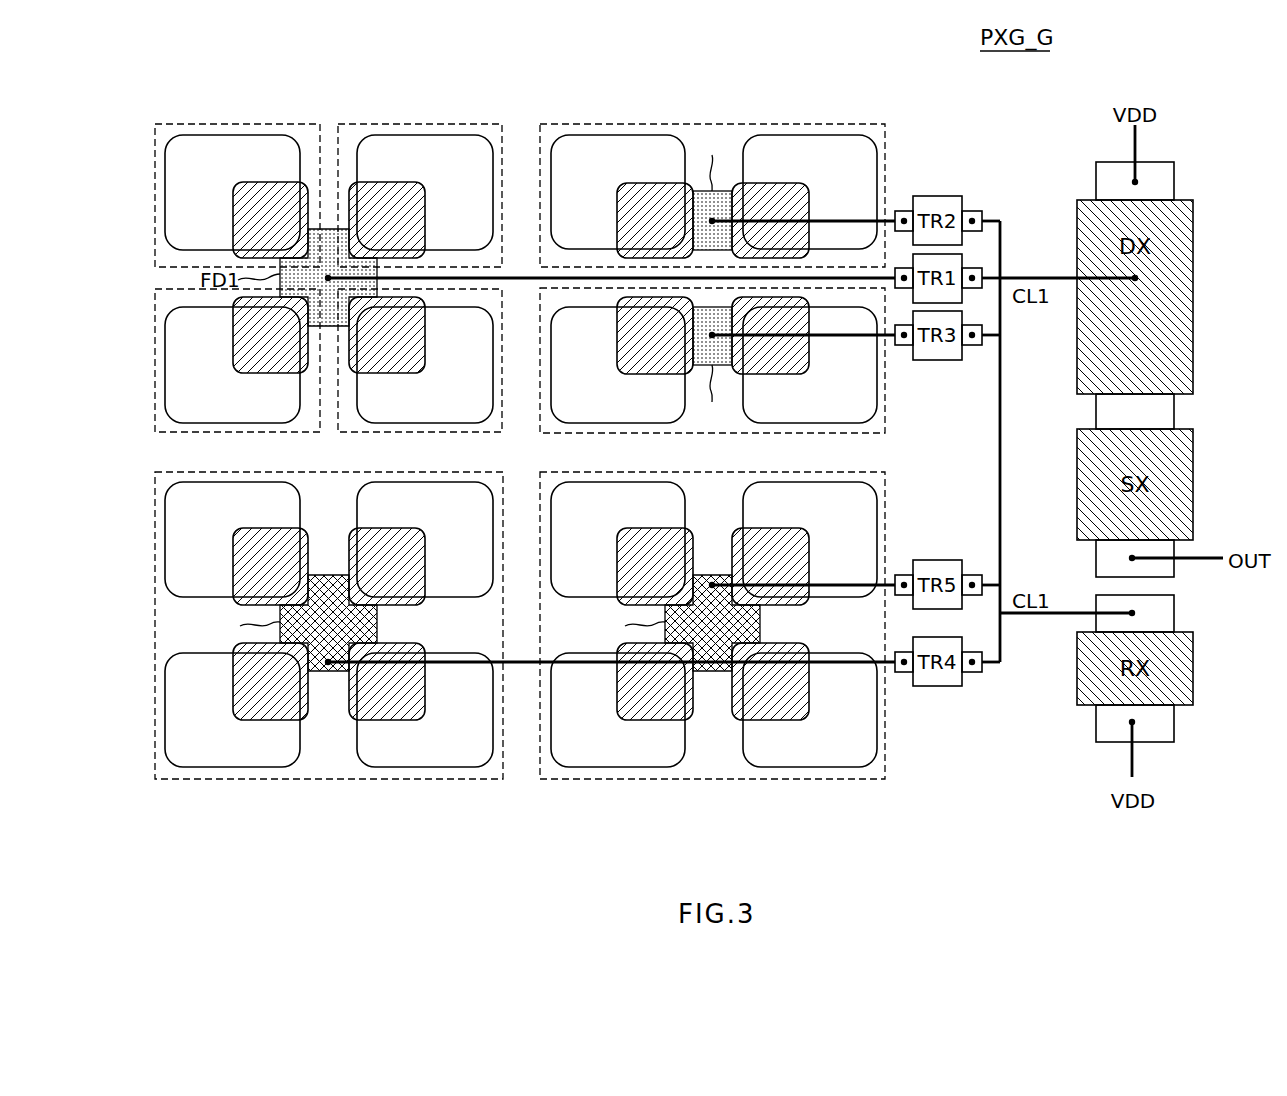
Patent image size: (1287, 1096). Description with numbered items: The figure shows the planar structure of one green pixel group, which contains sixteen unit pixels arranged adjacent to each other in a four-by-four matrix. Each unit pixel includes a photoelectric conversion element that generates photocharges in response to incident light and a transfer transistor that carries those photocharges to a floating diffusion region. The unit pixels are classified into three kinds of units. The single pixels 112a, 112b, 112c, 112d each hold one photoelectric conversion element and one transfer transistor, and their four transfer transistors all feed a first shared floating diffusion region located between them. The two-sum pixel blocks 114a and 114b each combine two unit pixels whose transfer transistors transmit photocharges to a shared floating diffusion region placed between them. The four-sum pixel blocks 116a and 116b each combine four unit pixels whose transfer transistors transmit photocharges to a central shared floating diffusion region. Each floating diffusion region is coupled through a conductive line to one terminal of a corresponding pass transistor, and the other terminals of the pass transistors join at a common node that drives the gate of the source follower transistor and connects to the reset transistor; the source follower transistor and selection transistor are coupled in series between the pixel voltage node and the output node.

The single pixel 112a is at (236, 124).
The single pixel 112b is at (419, 124).
The single pixel 112c is at (155, 358).
The single pixel 112d is at (492, 433).
The 2-SUM pixel block 114a is at (711, 124).
The 2-SUM pixel block 114b is at (885, 410).
The 4-SUM pixel block 116a is at (330, 780).
The 4-SUM pixel block 116b is at (712, 780).